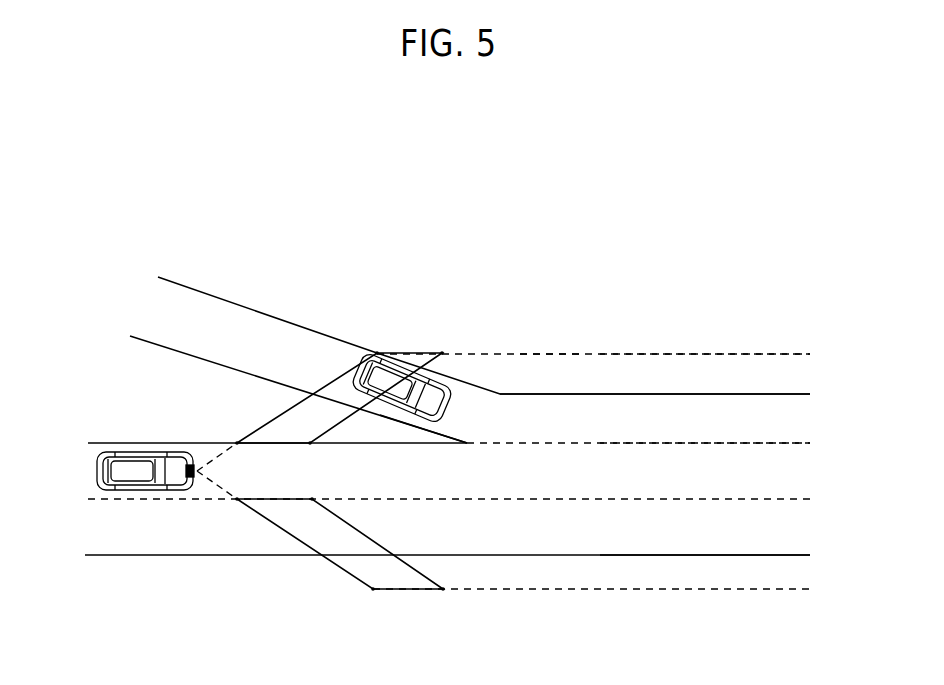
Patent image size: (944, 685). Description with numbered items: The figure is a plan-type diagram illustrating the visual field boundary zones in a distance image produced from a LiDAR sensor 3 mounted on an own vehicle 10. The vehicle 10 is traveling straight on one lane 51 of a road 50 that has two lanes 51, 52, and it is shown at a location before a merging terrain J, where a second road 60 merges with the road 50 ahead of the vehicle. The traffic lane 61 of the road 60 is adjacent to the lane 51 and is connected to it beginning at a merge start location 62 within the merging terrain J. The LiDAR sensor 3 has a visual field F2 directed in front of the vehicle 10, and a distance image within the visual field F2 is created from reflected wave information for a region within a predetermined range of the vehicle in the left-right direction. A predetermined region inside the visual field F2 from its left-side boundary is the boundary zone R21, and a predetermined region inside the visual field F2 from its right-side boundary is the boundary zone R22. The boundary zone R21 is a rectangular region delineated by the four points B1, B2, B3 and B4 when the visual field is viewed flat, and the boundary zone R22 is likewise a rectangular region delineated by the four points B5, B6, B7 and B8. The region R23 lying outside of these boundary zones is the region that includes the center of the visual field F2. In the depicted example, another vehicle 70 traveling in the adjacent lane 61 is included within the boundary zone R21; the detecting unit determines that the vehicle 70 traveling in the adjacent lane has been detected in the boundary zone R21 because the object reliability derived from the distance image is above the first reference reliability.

The vehicle 10 is at (132, 468).
The LiDAR sensor 3 is at (180, 462).
The road 50 is at (198, 558).
The lane 51 is at (770, 536).
The lane 52 is at (770, 486).
The road 60 is at (273, 314).
The traffic lane 61 is at (770, 431).
The merge start location 62 is at (468, 446).
The vehicle 70 is at (448, 407).
The visual field F2 is at (670, 354).
The merging terrain J is at (546, 338).
The boundary zone R21 is at (405, 353).
The boundary zone R22 is at (410, 592).
The region R23 is at (428, 485).
The point B1 is at (222, 432).
The point B2 is at (372, 339).
The point B3 is at (452, 339).
The point B4 is at (306, 456).
The point B5 is at (223, 515).
The point B6 is at (371, 604).
The point B7 is at (441, 604).
The point B8 is at (306, 488).